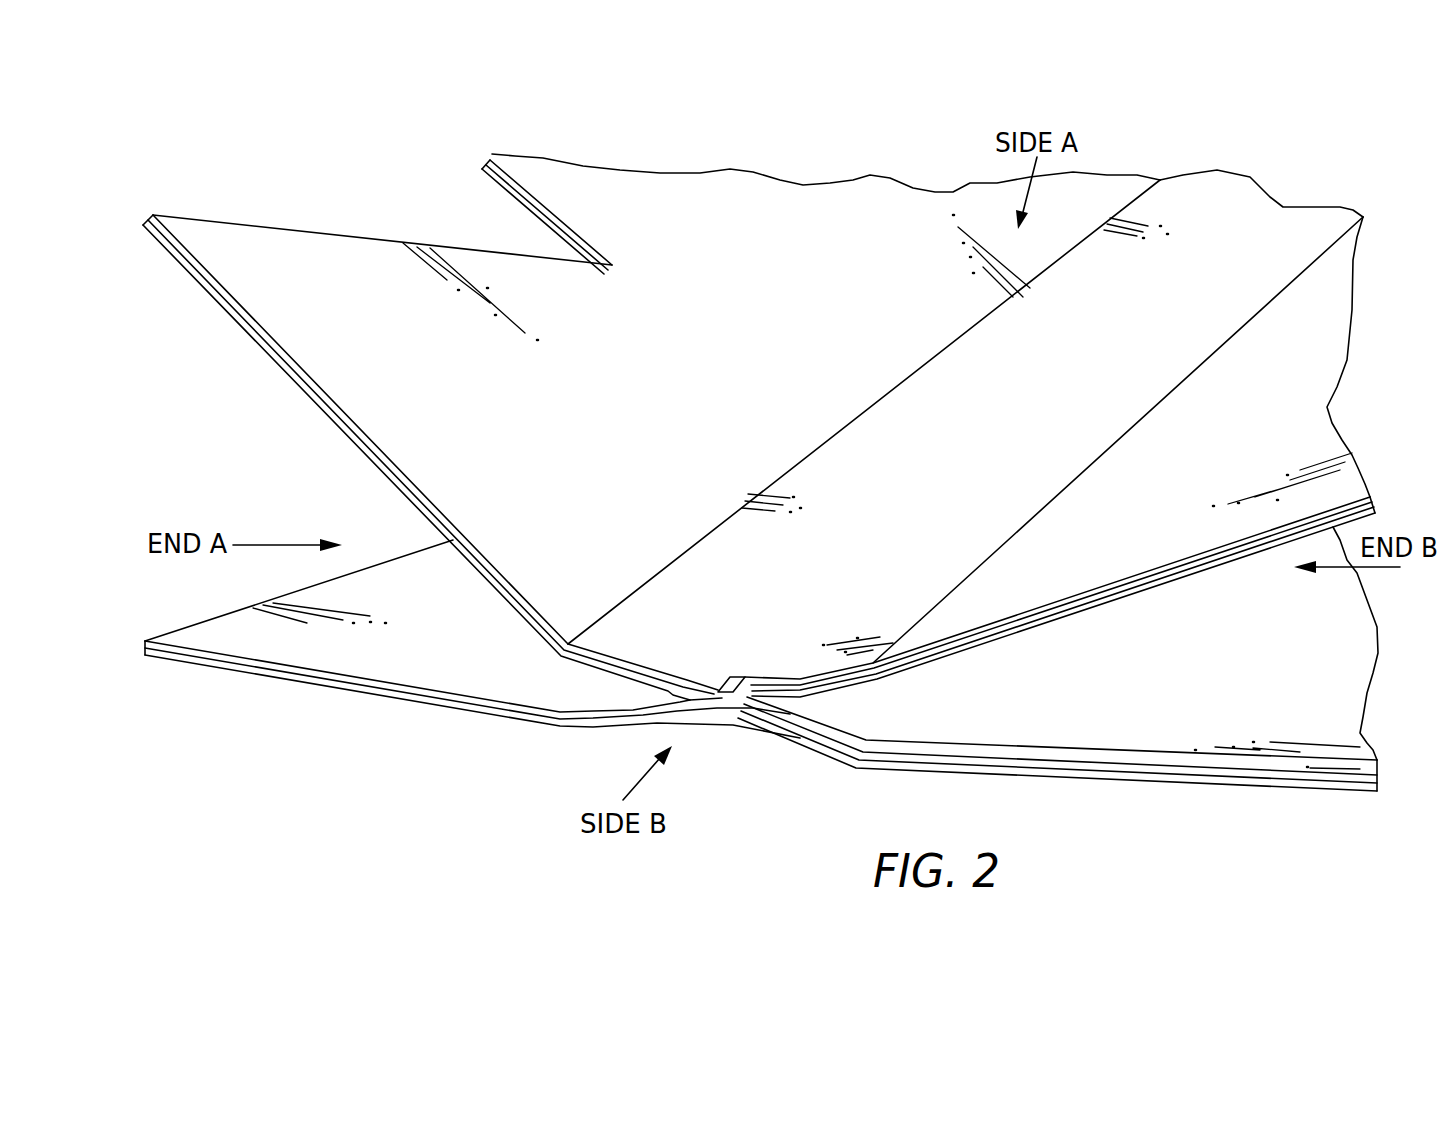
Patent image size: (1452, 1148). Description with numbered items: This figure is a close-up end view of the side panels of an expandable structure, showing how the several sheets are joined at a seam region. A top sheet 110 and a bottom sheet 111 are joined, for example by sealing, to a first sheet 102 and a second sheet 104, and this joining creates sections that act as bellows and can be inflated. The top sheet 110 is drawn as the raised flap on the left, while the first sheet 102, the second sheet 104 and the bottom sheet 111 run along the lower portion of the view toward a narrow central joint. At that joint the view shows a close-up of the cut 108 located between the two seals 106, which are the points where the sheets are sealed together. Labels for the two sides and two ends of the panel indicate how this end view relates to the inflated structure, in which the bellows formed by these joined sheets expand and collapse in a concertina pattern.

The first sheet 102 is at (605, 662).
The second sheet 104 is at (643, 703).
The seals 106 is at (709, 679).
The cut 108 is at (727, 708).
The top sheet 110 is at (325, 362).
The bottom sheet 111 is at (641, 724).